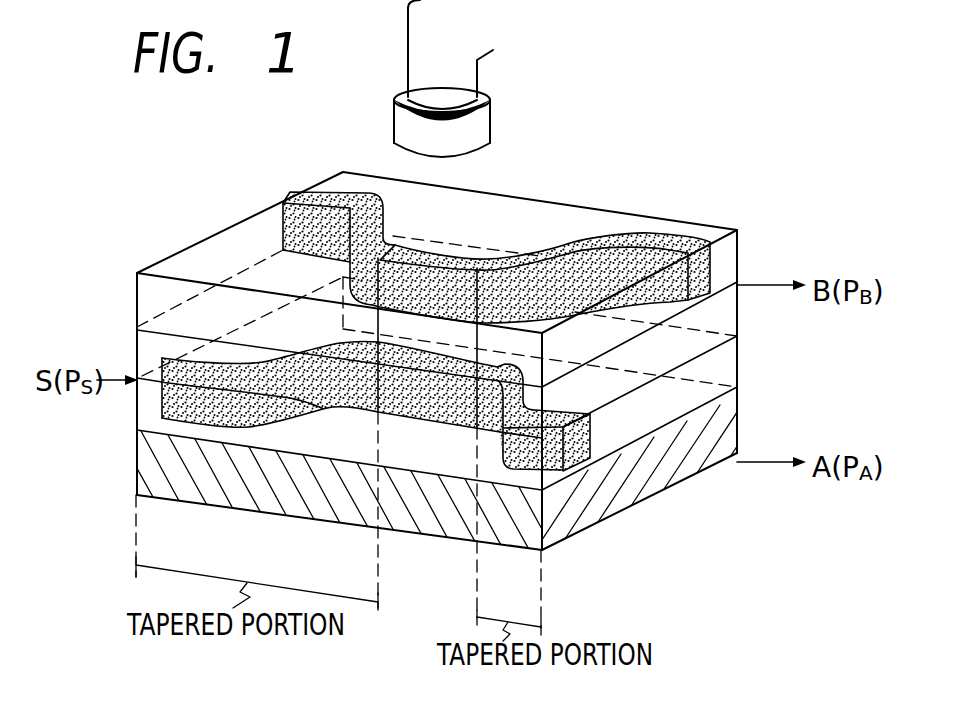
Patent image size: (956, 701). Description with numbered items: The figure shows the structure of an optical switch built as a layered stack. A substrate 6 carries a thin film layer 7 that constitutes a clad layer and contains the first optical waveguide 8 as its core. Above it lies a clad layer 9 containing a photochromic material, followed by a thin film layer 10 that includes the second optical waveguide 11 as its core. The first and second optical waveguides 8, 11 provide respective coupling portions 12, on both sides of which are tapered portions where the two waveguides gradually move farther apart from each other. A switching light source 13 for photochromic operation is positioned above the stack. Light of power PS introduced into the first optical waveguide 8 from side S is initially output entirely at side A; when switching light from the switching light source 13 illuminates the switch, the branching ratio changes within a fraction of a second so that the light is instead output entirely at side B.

The substrate 6 is at (673, 467).
The thin film layer 7 is at (723, 367).
The first optical waveguide 8 is at (577, 457).
The clad layer 9 is at (723, 313).
The thin film layer 10 is at (578, 223).
The second optical waveguide 11 is at (683, 240).
The coupling portions 12 is at (492, 234).
The switching light source 13 is at (476, 131).